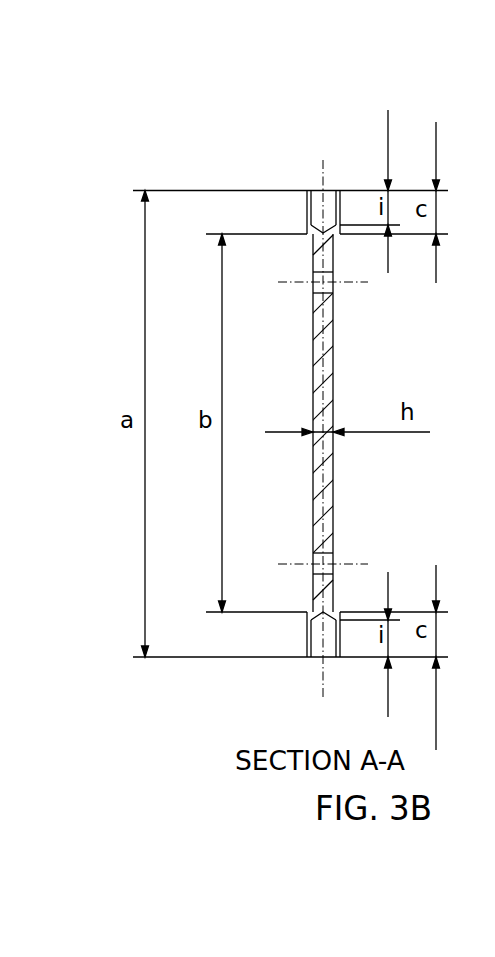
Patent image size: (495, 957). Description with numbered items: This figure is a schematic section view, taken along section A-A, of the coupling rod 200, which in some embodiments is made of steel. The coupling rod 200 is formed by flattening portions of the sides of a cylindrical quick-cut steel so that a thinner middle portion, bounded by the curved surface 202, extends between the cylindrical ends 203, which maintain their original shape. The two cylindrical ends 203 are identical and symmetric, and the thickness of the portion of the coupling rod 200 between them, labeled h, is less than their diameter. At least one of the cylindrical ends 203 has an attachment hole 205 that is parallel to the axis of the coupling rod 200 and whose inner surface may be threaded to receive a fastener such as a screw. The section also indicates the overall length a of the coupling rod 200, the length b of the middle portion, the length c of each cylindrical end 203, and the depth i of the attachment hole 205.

The coupling rod 200 is at (275, 370).
The curved surface 202 is at (328, 345).
The cylindrical ends 203 is at (306, 201).
The attachment hole 205 is at (318, 191).